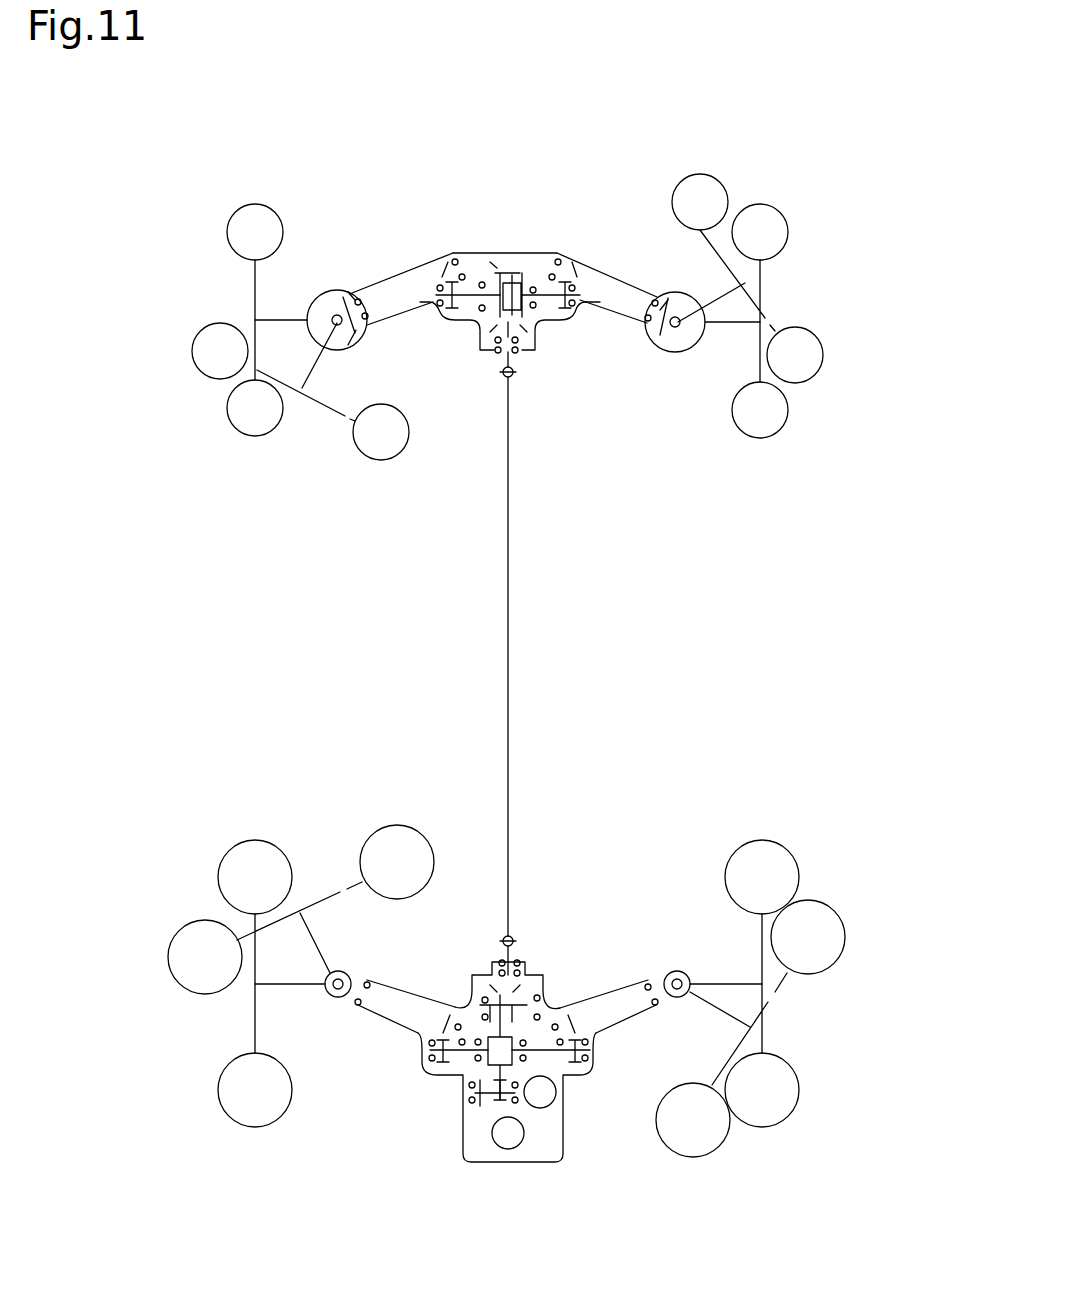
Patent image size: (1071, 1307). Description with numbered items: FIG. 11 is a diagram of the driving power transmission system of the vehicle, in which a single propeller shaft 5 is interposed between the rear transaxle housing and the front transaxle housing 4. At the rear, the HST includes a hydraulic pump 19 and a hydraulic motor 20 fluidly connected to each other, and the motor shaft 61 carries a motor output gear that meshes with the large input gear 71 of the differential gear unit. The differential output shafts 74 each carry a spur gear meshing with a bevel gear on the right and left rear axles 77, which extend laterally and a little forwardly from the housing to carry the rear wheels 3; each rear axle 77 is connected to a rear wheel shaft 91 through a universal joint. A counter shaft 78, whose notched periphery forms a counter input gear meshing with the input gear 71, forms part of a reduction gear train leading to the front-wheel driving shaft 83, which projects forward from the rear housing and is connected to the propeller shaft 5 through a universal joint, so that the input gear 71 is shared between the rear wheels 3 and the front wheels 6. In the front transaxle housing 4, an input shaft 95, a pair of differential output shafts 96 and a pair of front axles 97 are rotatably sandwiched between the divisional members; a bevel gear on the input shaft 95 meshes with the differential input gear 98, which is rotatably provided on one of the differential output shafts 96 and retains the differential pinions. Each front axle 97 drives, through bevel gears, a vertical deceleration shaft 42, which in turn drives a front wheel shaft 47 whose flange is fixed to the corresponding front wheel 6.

The rear wheels 3 is at (255, 840).
The front transaxle housing 4 is at (532, 252).
The propeller shaft 5 is at (508, 585).
The front wheels 6 is at (286, 212).
The hydraulic pump 19 is at (549, 1144).
The hydraulic motor 20 is at (557, 1093).
The deceleration shaft 42 is at (347, 333).
The front wheel shaft 47 is at (290, 318).
The motor shaft 61 is at (495, 1097).
The input gear 71 is at (455, 1075).
The differential output shafts 74 is at (452, 1077).
The rear axles 77 is at (402, 1008).
The counter shaft 78 is at (533, 988).
The front-wheel driving shaft 83 is at (520, 950).
The rear wheel shaft 91 is at (290, 986).
The input shaft 95 is at (504, 360).
The differential output shafts 96 is at (468, 298).
The front axles 97 is at (410, 288).
The differential input gear 98 is at (497, 257).